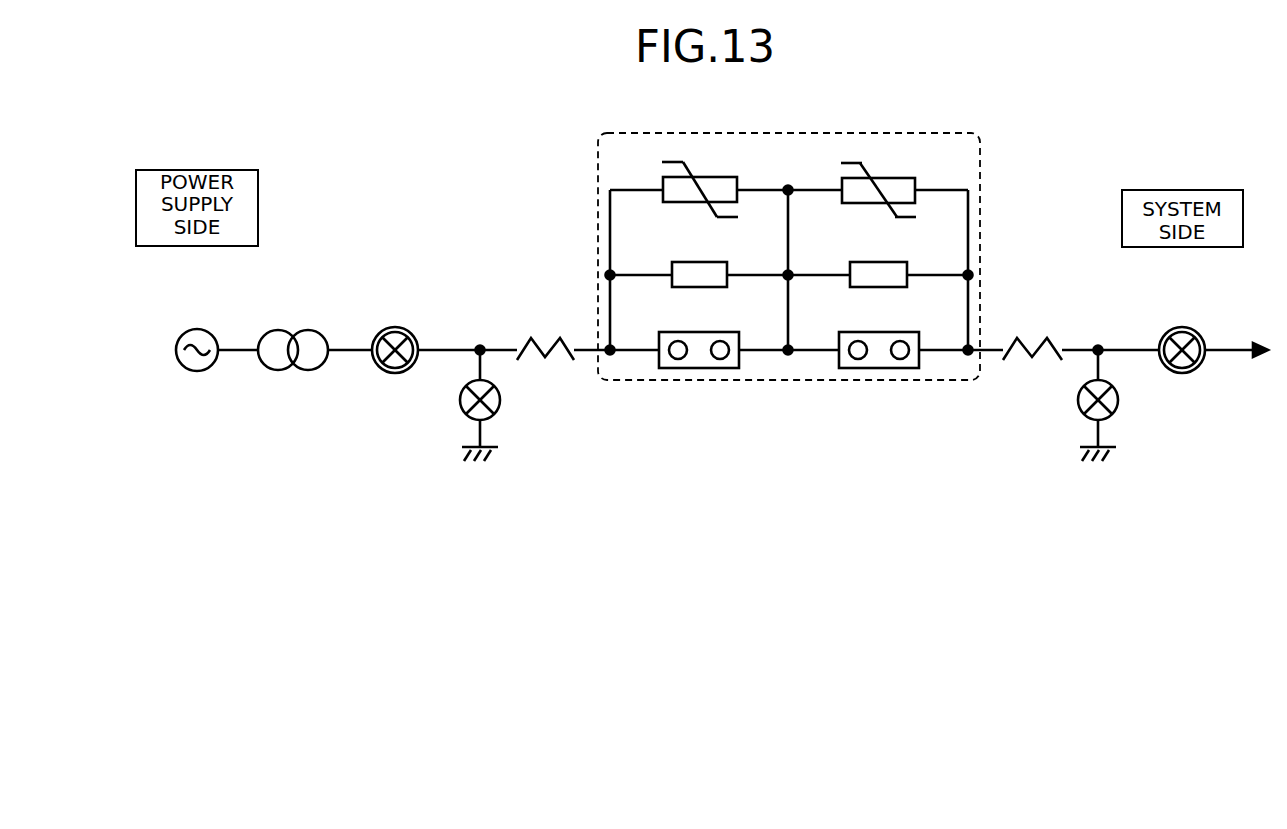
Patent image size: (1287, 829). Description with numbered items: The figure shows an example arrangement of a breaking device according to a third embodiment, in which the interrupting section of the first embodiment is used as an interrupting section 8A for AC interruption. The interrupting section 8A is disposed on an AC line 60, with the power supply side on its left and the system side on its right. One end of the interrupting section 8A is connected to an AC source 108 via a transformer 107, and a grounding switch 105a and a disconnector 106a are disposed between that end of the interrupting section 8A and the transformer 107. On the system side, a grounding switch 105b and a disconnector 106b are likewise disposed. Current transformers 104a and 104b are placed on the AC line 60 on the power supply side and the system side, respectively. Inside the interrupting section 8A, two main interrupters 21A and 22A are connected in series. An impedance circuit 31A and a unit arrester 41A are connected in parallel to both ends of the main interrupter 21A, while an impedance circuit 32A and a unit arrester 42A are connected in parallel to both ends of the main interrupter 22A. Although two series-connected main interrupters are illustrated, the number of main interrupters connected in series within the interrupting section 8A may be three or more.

The interrupting section 8A is at (919, 133).
The main interrupter 21A is at (717, 332).
The main interrupter 22A is at (896, 332).
The impedance circuit 31A is at (717, 262).
The impedance circuit 32A is at (896, 262).
The unit arrester 41A is at (717, 177).
The unit arrester 42A is at (896, 178).
The AC line 60 is at (500, 348).
The current transformer 104a is at (548, 355).
The current transformer 104b is at (1033, 357).
The grounding switch 105a is at (460, 402).
The grounding switch 105b is at (1118, 400).
The disconnector 106a is at (392, 326).
The disconnector 106b is at (1180, 327).
The transformer 107 is at (305, 329).
The AC source 108 is at (195, 328).